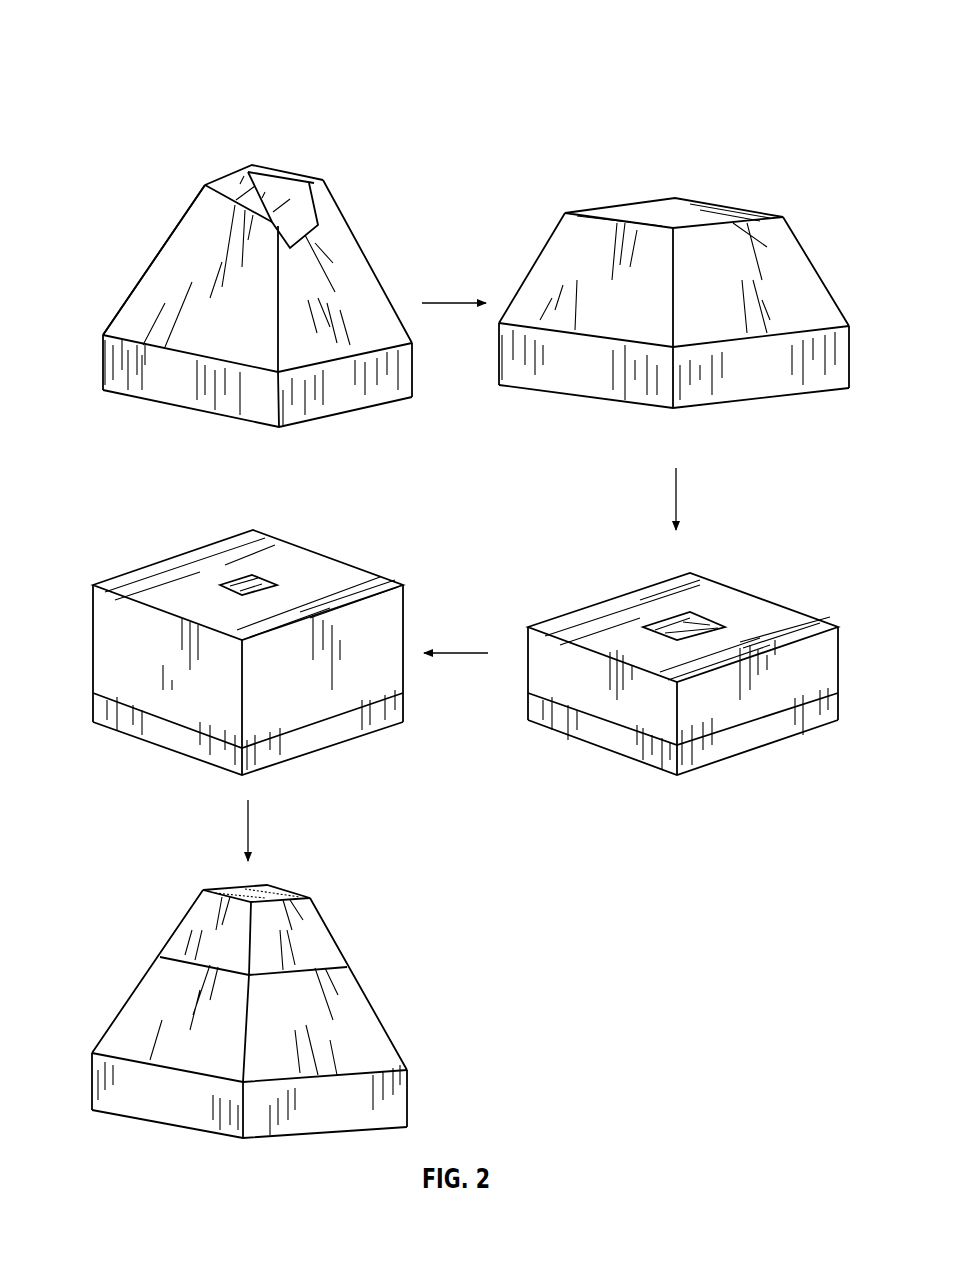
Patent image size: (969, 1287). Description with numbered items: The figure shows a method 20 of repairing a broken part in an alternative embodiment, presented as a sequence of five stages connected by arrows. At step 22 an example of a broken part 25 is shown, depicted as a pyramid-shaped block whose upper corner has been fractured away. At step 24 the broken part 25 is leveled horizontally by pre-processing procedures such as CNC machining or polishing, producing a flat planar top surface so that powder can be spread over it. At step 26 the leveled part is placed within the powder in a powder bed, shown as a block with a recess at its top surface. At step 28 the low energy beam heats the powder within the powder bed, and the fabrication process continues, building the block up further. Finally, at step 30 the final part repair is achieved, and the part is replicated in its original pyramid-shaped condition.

The method of repairing a broken part 20 is at (771, 82).
The step showing the broken part 22 is at (339, 171).
The leveling step 24 is at (731, 189).
The broken part 25 is at (141, 258).
The powder placement step 26 is at (768, 564).
The fabrication step 28 is at (345, 534).
The final part repair step 30 is at (177, 897).